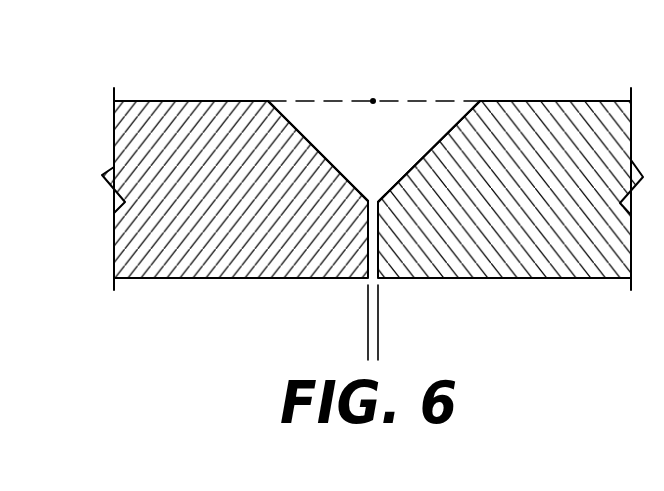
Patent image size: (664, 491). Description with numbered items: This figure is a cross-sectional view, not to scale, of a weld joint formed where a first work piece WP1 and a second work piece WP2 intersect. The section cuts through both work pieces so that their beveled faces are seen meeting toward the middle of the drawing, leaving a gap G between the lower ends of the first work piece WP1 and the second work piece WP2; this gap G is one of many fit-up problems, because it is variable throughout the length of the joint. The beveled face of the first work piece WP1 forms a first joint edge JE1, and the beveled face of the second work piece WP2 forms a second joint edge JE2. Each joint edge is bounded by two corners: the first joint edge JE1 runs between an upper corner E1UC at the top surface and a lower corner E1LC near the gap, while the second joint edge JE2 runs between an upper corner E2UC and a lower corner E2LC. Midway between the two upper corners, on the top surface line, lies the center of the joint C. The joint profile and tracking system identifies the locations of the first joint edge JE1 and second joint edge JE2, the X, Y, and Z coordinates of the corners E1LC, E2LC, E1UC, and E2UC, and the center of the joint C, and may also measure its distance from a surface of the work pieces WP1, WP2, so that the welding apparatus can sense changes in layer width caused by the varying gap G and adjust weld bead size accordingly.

The second work piece WP2 is at (207, 277).
The first work piece WP1 is at (528, 278).
The second joint edge JE2 is at (268, 101).
The first joint edge JE1 is at (480, 101).
The upper corner of the second joint edge E2UC is at (268, 101).
The upper corner of the first joint edge E1UC is at (480, 101).
The lower corner of the second joint edge E2LC is at (369, 203).
The lower corner of the first joint edge E1LC is at (379, 203).
The center of the joint C is at (373, 101).
The gap G is at (350, 345).